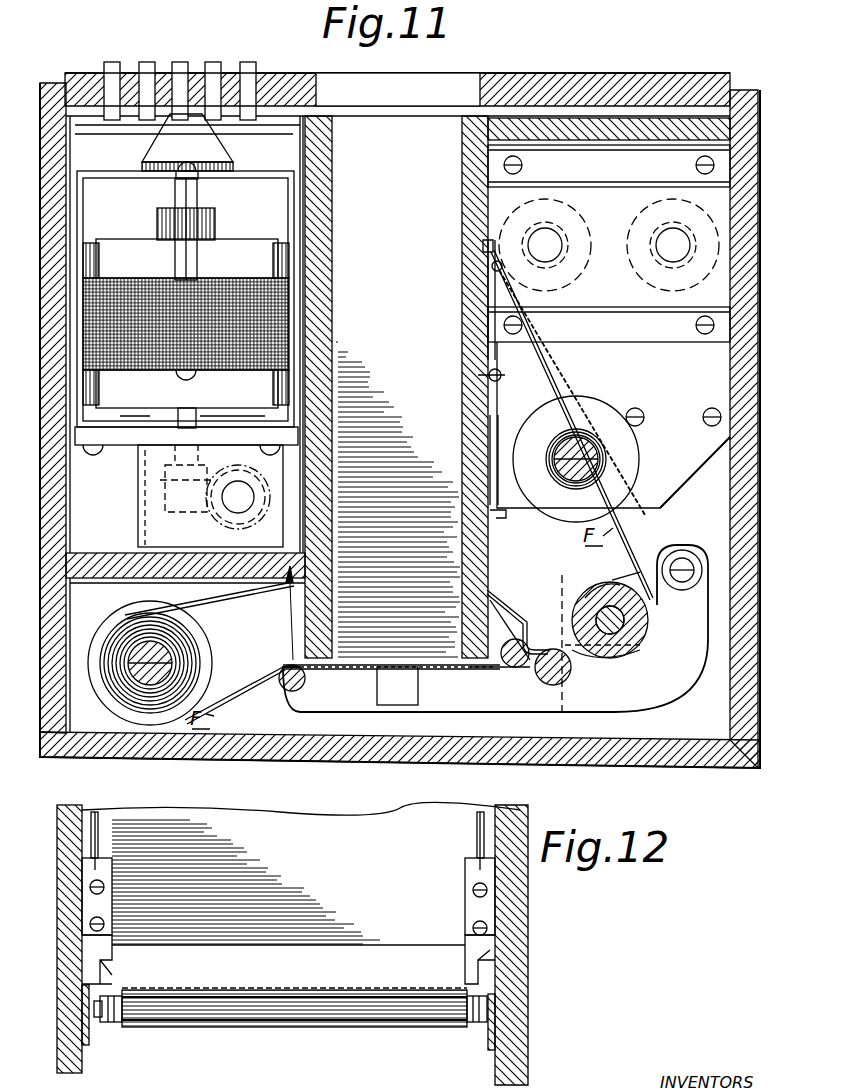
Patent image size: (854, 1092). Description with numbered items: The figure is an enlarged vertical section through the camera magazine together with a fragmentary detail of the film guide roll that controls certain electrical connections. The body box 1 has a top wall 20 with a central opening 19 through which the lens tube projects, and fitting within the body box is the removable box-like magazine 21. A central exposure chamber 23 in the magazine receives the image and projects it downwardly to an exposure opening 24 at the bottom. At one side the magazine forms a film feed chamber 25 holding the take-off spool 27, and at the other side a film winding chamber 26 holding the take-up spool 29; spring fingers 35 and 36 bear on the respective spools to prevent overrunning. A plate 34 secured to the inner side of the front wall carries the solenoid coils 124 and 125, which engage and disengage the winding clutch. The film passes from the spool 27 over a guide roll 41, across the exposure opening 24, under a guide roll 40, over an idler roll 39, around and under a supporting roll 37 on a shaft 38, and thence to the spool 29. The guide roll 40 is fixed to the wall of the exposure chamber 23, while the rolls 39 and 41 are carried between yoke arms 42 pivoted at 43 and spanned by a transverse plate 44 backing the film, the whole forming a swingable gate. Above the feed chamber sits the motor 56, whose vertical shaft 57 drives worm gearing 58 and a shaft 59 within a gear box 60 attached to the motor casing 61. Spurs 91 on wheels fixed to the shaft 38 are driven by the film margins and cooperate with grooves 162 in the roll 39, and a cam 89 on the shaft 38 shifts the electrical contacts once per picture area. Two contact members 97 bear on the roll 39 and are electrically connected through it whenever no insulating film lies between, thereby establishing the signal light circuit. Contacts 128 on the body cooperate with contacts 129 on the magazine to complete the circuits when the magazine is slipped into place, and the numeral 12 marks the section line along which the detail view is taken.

In FIG. 11, the body box 1 is at (754, 490).
In FIG. 11, the central opening 19 is at (456, 84).
In FIG. 11, the top wall 20 is at (608, 73).
In FIG. 11, the magazine 21 is at (492, 124).
In FIG. 12, the magazine 21 is at (60, 872).
In FIG. 11, the exposure chamber 23 is at (398, 457).
In FIG. 11, the exposure opening 24 is at (388, 656).
In FIG. 11, the film feed chamber 25 is at (264, 621).
In FIG. 11, the film winding chamber 26 is at (695, 478).
In FIG. 11, the take-off spool 27 is at (202, 632).
In FIG. 11, the take-up spool 29 is at (610, 408).
In FIG. 11, the plate 34 is at (712, 382).
In FIG. 11, the spring finger 35 is at (186, 602).
In FIG. 11, the spring finger 36 is at (572, 380).
In FIG. 11, the supporting roll 37 is at (640, 656).
In FIG. 11, the shaft 38 is at (630, 620).
In FIG. 11, the idler roll 39 is at (574, 680).
In FIG. 12, the idler roll 39 is at (292, 1022).
In FIG. 11, the guide roll 40 is at (502, 668).
In FIG. 11, the guide roll 41 is at (218, 690).
In FIG. 11, the yoke arms 42 is at (660, 692).
In FIG. 12, the yoke arms 42 is at (88, 1038).
In FIG. 11, the pivot 43 is at (690, 556).
In FIG. 11, the transverse plate 44 is at (470, 689).
In FIG. 11, the motor 56 is at (240, 242).
In FIG. 11, the vertical shaft 57 is at (210, 416).
In FIG. 11, the worm gearing 58 is at (207, 518).
In FIG. 11, the shaft 59 is at (238, 497).
In FIG. 11, the gear box 60 is at (138, 488).
In FIG. 11, the motor casing 61 is at (96, 416).
In FIG. 11, the cam 89 is at (640, 566).
In FIG. 11, the spurs 91 is at (620, 582).
In FIG. 11, the contact members 97 is at (545, 632).
In FIG. 12, the contact members 97 is at (110, 955).
In FIG. 11, the chamber 12 is at (576, 569).
In FIG. 11, the solenoid coil 124 is at (578, 218).
In FIG. 11, the solenoid coil 125 is at (630, 268).
In FIG. 11, the contacts 128 is at (258, 70).
In FIG. 11, the contacts 129 is at (258, 122).
In FIG. 12, the grooves 162 is at (126, 1034).